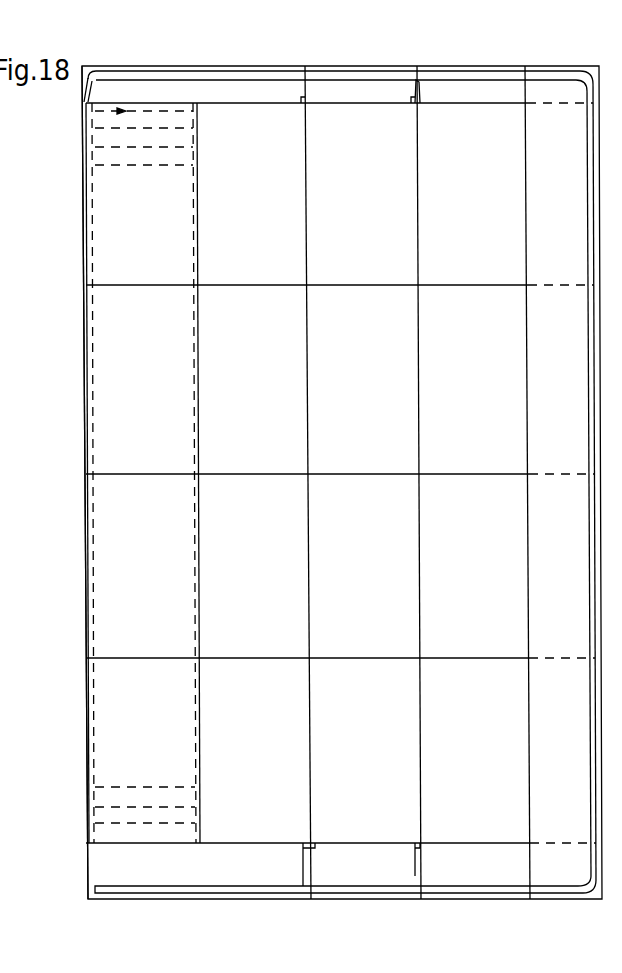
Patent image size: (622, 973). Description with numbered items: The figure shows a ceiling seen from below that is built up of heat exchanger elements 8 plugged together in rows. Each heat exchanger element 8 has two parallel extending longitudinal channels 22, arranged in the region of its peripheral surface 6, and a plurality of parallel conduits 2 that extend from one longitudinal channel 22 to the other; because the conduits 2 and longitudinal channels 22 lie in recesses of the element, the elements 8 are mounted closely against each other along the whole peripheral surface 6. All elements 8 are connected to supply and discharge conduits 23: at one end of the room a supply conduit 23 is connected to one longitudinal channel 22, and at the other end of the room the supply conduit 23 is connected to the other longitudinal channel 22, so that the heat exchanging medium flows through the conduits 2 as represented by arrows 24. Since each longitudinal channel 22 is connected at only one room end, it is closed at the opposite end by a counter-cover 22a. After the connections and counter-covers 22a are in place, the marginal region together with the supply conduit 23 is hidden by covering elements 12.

The conduit 2 is at (178, 128).
The peripheral surface 6 is at (3, 165).
The heat exchanger element 8 is at (139, 239).
The covering element 12 is at (569, 762).
The longitudinal channel 22 is at (192, 252).
The counter-cover 22a is at (195, 102).
The supply and discharge conduit 23 is at (357, 86).
The arrows 24 is at (91, 128).